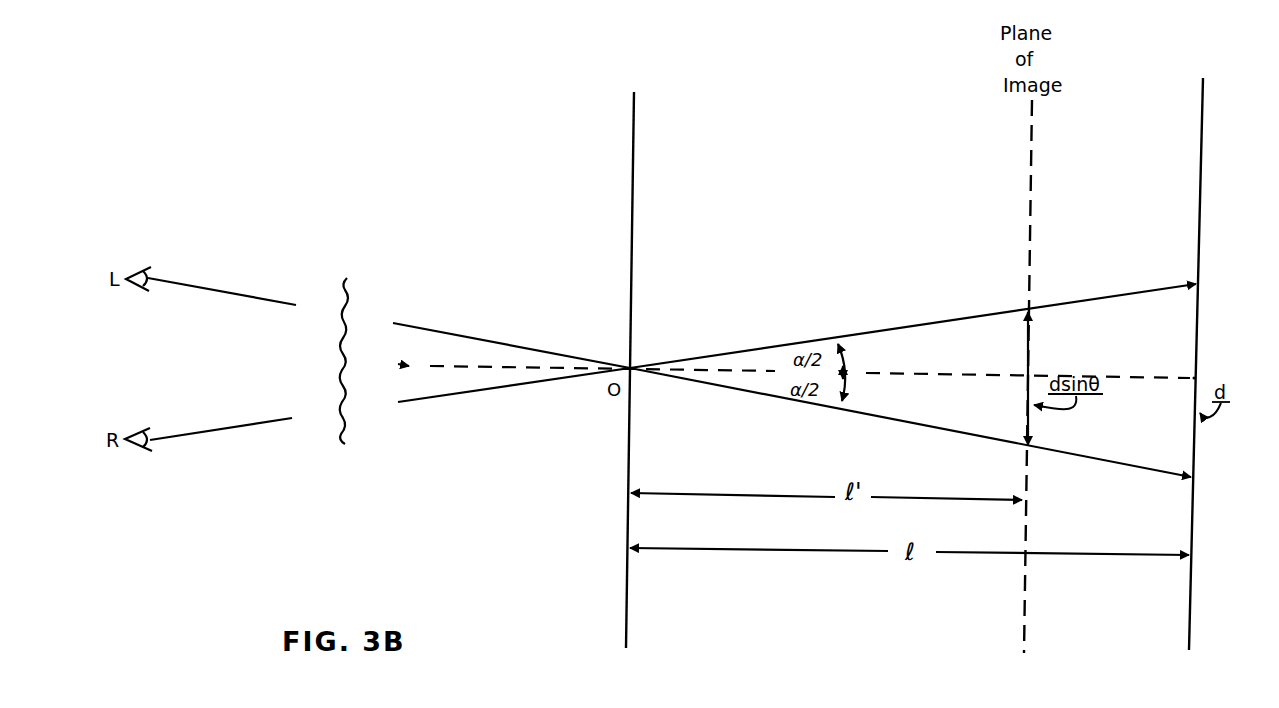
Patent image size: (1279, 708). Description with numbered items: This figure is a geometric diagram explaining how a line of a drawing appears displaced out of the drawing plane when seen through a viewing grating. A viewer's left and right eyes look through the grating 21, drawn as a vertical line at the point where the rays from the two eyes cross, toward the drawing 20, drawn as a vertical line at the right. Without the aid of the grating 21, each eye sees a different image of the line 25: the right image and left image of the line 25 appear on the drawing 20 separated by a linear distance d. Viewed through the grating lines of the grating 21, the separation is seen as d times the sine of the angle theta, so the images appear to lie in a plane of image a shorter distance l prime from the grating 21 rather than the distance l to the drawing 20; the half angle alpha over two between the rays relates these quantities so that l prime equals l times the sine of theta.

The drawing 20 is at (1207, 100).
The grating 21 is at (640, 127).
The line 25 is at (1195, 378).